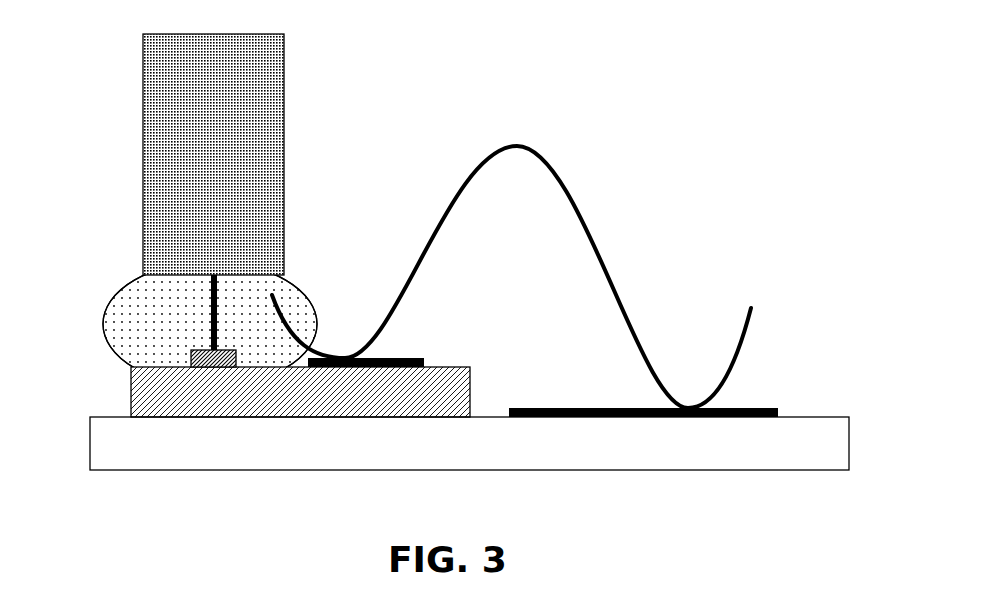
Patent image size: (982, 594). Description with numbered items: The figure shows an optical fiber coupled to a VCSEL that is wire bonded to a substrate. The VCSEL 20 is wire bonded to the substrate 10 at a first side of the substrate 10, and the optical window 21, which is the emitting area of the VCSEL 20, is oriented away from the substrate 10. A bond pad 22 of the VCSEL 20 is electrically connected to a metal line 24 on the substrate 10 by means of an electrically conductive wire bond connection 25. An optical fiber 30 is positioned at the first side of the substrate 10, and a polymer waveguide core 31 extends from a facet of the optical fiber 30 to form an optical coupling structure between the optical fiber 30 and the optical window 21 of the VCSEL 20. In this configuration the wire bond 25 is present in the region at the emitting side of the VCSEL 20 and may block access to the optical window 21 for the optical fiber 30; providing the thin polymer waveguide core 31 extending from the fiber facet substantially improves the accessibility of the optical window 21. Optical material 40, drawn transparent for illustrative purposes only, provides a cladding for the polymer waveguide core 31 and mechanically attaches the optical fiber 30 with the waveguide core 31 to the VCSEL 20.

The substrate 10 is at (469, 443).
The VCSEL 20 is at (172, 397).
The optical window 21 is at (190, 358).
The bond pad 22 is at (430, 357).
The metal line 24 is at (780, 409).
The wire bond connection 25 is at (576, 202).
The optical fiber 30 is at (177, 167).
The polymer waveguide core 31 is at (207, 294).
The optical material 40 is at (210, 324).